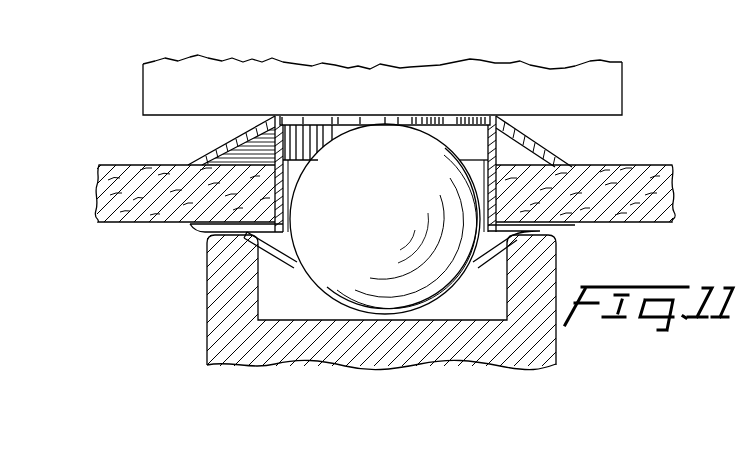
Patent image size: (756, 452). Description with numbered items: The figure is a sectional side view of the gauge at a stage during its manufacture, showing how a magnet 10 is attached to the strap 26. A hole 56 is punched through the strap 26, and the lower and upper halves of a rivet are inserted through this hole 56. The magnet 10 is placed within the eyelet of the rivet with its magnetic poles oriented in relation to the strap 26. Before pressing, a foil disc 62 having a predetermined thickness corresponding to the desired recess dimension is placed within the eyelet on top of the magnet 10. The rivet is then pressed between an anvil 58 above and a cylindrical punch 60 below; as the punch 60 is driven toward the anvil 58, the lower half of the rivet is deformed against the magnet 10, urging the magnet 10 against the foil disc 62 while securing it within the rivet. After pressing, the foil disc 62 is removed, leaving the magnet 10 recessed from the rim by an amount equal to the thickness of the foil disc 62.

The magnet 10 is at (433, 290).
The strap 26 is at (614, 175).
The hole 56 is at (505, 165).
The anvil 58 is at (391, 101).
The cylindrical punch 60 is at (540, 350).
The foil disc 62 is at (446, 120).